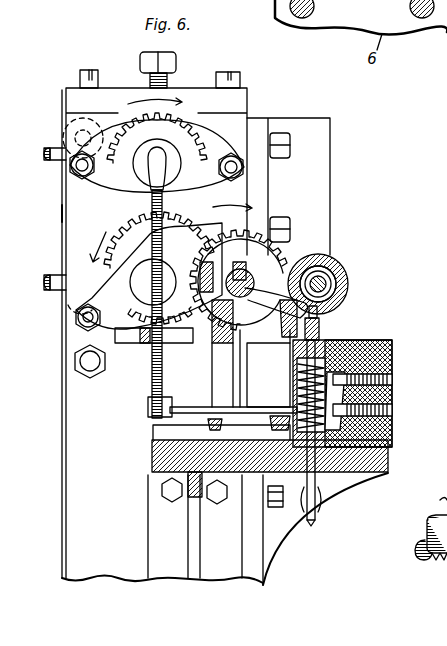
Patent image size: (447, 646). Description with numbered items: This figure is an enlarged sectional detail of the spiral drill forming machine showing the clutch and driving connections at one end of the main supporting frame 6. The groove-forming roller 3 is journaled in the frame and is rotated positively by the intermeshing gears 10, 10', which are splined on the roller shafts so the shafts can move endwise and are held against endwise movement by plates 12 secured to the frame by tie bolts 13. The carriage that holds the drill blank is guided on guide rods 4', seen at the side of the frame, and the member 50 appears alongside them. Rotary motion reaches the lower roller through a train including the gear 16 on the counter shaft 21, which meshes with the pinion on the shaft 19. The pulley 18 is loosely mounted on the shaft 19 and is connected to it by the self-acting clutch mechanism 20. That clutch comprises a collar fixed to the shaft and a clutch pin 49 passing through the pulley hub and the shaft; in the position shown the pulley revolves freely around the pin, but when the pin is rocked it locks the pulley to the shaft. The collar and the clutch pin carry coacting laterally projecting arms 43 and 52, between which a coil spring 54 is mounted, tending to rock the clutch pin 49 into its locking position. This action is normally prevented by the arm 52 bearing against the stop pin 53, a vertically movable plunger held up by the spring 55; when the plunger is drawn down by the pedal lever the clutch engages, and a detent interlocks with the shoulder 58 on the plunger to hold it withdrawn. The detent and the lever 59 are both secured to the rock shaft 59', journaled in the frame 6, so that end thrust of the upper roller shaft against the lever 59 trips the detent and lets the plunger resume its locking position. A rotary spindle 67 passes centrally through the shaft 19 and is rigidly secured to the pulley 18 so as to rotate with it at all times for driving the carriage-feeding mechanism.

The groove-forming roller 3 is at (361, 17).
The main supporting frame 6 is at (163, 573).
The gear 16 is at (283, 251).
The guide rods 4' is at (45, 227).
The left plate 50 is at (62, 214).
The gear 10' is at (150, 121).
The gear 10 is at (167, 292).
The plates 12 is at (140, 318).
The tie bolts 13 is at (87, 305).
The lever 59 is at (143, 304).
The rock shaft 59' is at (233, 393).
The counter shaft 21 is at (240, 258).
The coil spring 54 is at (240, 337).
The clutch mechanism 20 is at (265, 368).
The laterally projecting arm 43 is at (268, 306).
The pulley 18 is at (340, 262).
The shaft 19 is at (334, 280).
The rotary spindle 67 is at (328, 280).
The clutch pin 49 is at (332, 292).
The laterally projecting arm 52 is at (319, 321).
The stop pin 53 is at (314, 516).
The shoulder 58 is at (320, 492).
The spring 55 is at (392, 399).